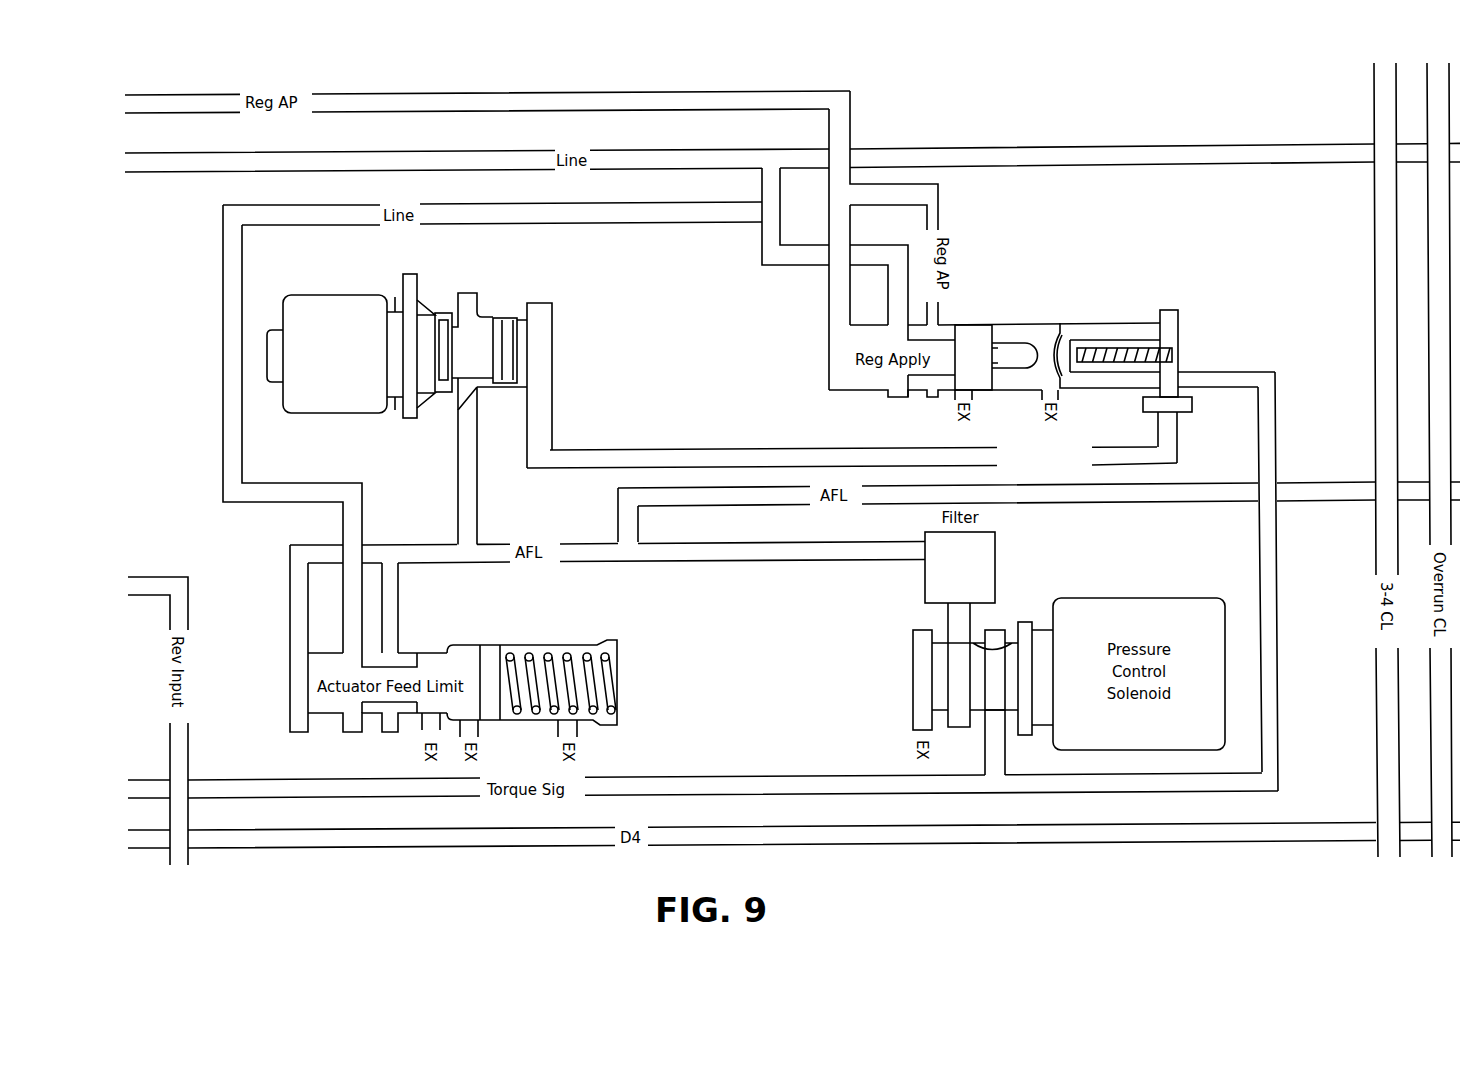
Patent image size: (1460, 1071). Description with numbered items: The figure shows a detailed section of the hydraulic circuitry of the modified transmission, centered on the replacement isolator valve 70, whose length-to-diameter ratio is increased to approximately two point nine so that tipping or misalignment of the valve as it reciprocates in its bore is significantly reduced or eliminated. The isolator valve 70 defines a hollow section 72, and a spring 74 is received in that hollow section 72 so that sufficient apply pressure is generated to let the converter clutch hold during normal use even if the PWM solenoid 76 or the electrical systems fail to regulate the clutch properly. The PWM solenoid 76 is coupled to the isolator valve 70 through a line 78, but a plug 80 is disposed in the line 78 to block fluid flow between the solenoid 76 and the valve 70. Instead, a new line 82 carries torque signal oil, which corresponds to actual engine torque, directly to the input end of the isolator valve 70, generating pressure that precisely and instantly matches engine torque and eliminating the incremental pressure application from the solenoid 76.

The isolator valve 70 is at (1133, 323).
The hollow section 72 is at (1085, 345).
The spring 74 is at (1183, 350).
The PWM solenoid 76 is at (327, 295).
The line 78 is at (612, 450).
The plug 80 is at (1192, 404).
The new line 82 is at (1280, 445).